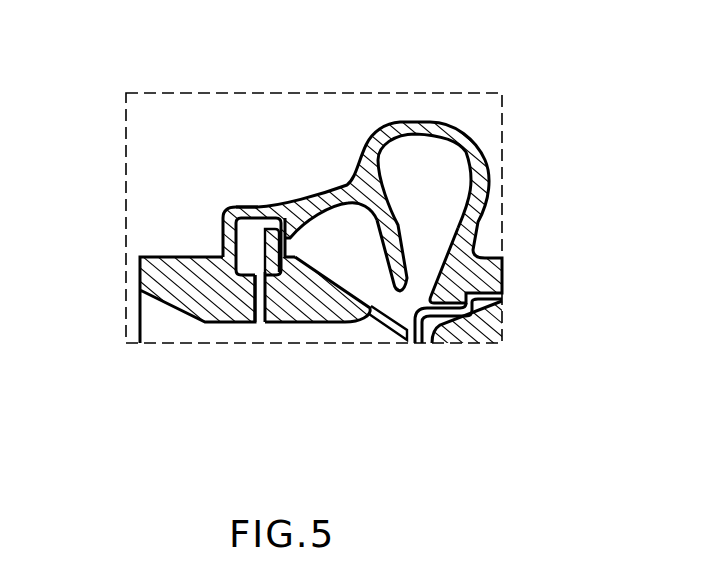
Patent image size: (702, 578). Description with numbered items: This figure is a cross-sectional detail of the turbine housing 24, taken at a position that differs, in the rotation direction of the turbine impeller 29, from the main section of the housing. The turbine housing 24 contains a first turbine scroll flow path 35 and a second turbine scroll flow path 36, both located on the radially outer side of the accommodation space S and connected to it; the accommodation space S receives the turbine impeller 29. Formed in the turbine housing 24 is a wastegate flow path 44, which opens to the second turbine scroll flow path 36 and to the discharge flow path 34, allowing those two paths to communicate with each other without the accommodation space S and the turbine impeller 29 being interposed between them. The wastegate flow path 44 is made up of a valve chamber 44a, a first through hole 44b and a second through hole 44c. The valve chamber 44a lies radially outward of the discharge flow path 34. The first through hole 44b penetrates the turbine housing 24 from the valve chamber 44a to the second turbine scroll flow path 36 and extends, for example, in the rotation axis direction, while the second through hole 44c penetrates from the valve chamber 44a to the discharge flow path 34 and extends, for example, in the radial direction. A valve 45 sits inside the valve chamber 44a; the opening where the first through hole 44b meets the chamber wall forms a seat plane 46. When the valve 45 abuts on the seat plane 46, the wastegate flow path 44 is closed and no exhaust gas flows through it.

The turbine housing 24 is at (478, 140).
The turbine impeller 29 is at (404, 319).
The discharge flow path 34 is at (222, 334).
The first turbine scroll flow path 35 is at (434, 138).
The second turbine scroll flow path 36 is at (328, 212).
The wastegate flow path 44 is at (223, 226).
The valve chamber 44a is at (243, 206).
The first through hole 44b is at (300, 324).
The second through hole 44c is at (258, 294).
The valve 45 is at (250, 247).
The seat plane 46 is at (274, 229).
The accommodation space S is at (362, 333).